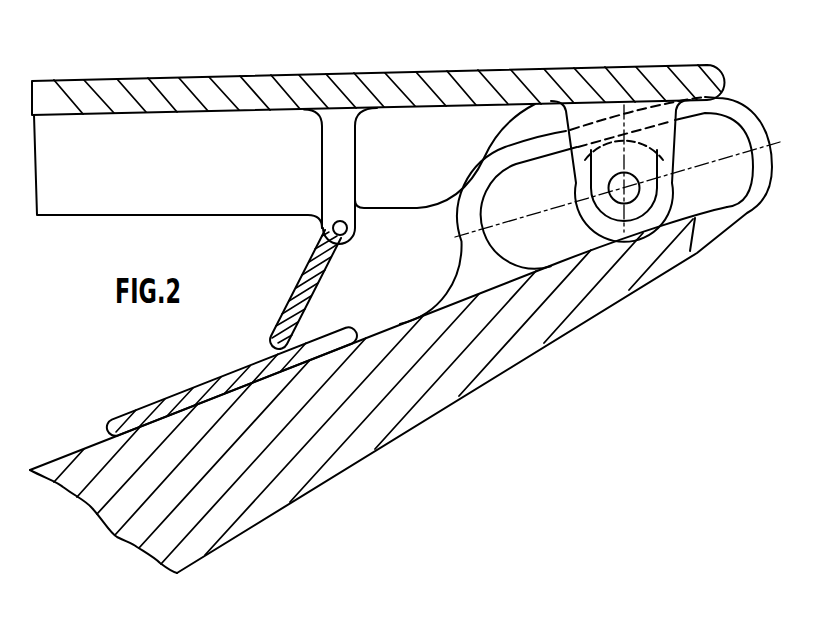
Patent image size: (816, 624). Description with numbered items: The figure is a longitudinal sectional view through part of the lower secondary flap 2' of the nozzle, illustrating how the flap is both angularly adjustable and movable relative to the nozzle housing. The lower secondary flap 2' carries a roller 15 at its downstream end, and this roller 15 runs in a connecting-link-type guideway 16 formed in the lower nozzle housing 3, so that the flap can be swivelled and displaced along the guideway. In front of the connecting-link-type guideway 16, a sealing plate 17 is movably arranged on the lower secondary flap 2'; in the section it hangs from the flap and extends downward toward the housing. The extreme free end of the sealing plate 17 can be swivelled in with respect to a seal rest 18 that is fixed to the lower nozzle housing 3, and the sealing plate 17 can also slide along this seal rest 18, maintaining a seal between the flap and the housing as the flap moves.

The lower secondary flap 2' is at (378, 66).
The lower nozzle housing 3 is at (366, 459).
The roller 15 is at (662, 205).
The connecting-link-type guideway 16 is at (577, 238).
The sealing plate 17 is at (295, 294).
The seal rest 18 is at (160, 400).